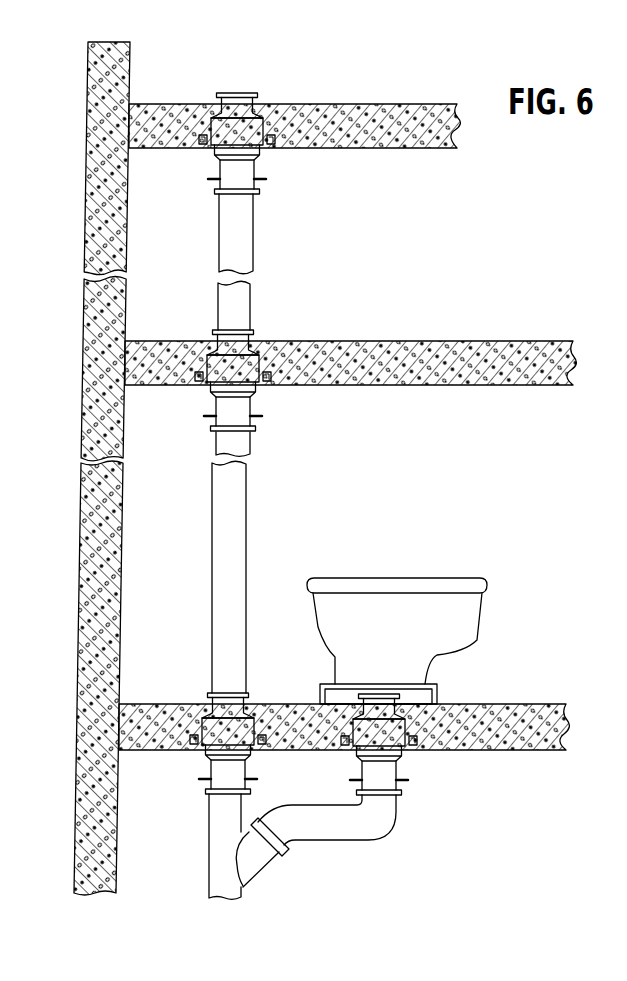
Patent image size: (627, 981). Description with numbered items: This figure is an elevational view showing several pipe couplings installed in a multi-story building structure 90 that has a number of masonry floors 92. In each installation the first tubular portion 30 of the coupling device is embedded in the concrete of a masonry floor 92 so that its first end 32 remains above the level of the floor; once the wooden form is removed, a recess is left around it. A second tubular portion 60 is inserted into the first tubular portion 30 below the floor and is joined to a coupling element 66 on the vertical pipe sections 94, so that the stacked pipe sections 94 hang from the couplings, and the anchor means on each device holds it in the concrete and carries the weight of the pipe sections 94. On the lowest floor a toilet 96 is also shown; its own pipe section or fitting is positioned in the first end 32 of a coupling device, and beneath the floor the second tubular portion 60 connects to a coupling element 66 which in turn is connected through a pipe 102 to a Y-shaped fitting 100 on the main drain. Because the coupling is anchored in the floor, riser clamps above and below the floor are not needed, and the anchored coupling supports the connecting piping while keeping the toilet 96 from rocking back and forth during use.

The first tubular portion 30 is at (215, 127).
The first end 32 is at (246, 92).
The second tubular portion 60 is at (246, 170).
The coupling element 66 is at (259, 193).
The building structure 90 is at (115, 542).
The masonry floors 92 is at (388, 106).
The pipe sections 94 is at (240, 254).
The toilet 96 is at (413, 601).
The Y-shaped fitting 100 is at (219, 869).
The pipe 102 is at (343, 832).